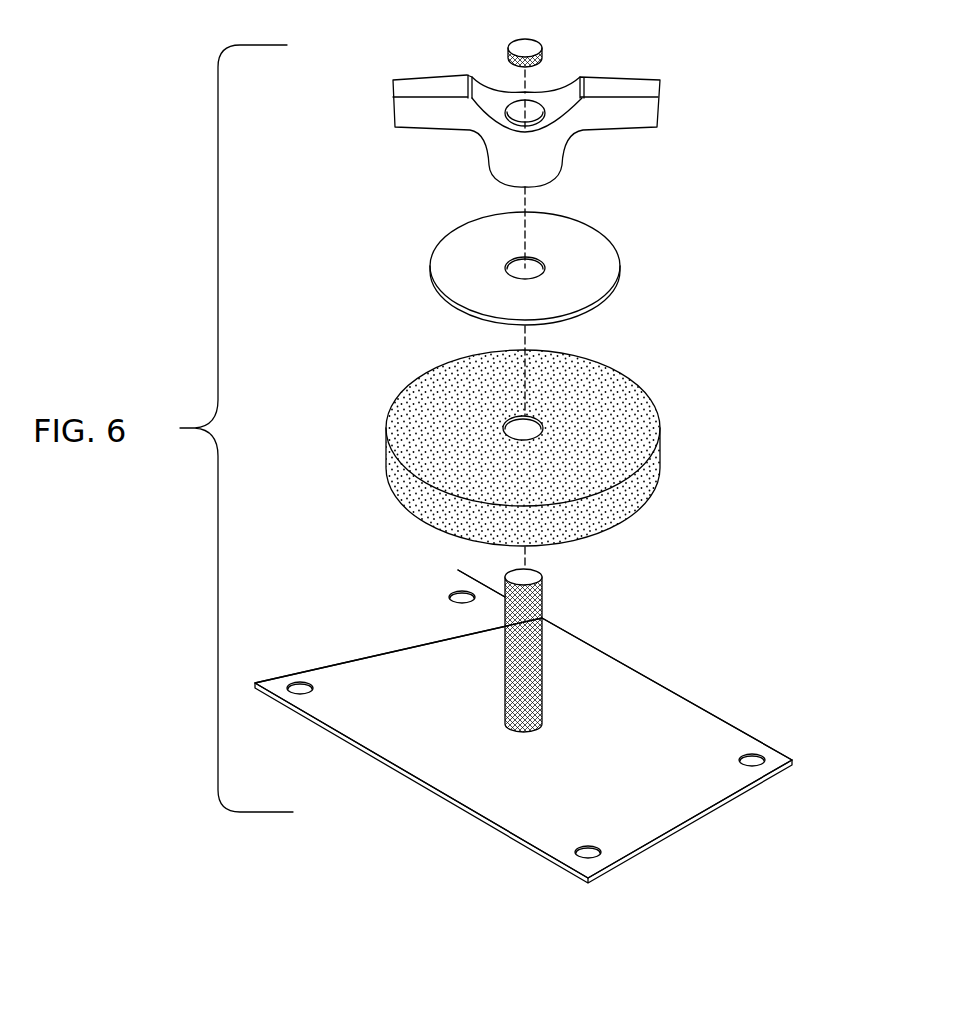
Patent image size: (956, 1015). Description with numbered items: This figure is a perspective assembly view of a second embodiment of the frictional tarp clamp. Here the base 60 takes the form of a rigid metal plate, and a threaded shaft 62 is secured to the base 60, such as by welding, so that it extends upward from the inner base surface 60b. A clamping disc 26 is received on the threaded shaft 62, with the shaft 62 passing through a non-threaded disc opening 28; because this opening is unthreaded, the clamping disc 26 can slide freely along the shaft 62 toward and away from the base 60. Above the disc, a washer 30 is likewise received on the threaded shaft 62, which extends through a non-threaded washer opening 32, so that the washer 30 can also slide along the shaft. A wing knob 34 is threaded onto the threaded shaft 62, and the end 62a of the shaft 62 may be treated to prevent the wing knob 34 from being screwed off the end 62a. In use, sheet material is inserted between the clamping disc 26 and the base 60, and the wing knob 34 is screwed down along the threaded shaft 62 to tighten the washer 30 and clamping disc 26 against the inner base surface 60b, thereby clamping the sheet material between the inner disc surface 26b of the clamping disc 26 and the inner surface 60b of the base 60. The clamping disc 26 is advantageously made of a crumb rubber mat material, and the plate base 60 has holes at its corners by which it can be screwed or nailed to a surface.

The wing knob 34 is at (602, 115).
The non-threaded washer opening 32 is at (528, 266).
The washer 30 is at (620, 262).
The non-threaded disc opening 28 is at (532, 428).
The clamping disc 26 is at (590, 448).
The inner disc surface 26b is at (645, 513).
The end of shaft 62a is at (540, 573).
The threaded shaft 62 is at (605, 636).
The base 60 is at (533, 726).
The inner base surface 60b is at (637, 687).